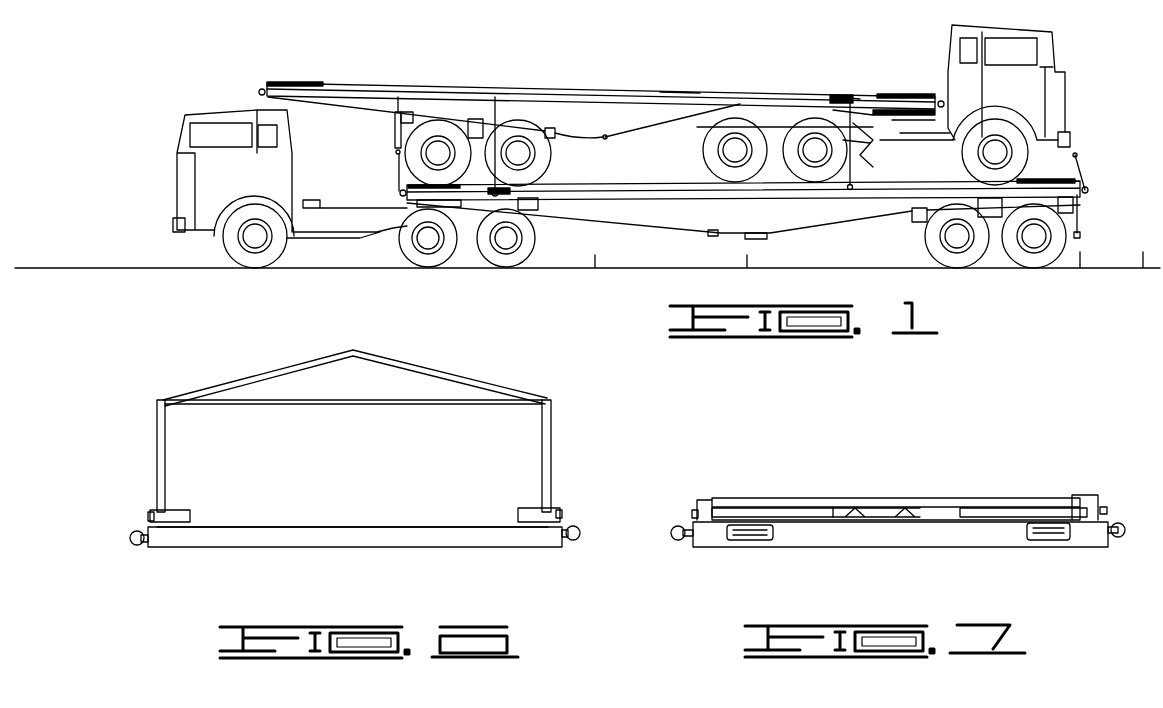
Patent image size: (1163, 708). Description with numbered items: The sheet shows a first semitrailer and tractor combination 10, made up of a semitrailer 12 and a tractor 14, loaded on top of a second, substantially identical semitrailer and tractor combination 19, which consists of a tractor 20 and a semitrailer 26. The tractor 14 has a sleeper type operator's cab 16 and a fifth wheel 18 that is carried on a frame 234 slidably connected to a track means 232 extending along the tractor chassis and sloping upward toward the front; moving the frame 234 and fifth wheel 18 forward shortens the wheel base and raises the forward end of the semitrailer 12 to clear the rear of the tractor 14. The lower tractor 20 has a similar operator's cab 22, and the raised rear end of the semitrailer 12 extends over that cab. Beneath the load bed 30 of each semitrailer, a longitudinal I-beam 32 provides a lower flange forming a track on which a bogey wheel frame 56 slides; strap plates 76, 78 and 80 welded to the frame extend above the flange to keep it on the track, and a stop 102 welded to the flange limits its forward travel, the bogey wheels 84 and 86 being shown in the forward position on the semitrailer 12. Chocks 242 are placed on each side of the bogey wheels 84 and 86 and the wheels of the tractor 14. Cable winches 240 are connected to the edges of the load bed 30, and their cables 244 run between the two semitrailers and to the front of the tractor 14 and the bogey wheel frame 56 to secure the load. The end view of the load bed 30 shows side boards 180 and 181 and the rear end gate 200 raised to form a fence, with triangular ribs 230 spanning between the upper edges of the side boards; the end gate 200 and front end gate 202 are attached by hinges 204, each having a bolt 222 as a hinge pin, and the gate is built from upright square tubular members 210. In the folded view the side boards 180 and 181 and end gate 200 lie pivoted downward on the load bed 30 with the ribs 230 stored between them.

In FIG. 1, the first semitrailer and tractor combination 10 is at (843, 63).
In FIG. 1, the semitrailer 12 is at (408, 72).
In FIG. 1, the tractor 14 is at (1087, 90).
In FIG. 1, the operator's cab 16 is at (1007, 27).
In FIG. 1, the fifth wheel 18 is at (912, 118).
In FIG. 1, the second semitrailer and tractor combination 19 is at (395, 245).
In FIG. 1, the tractor 20 is at (220, 247).
In FIG. 1, the operator's cab 22 is at (215, 110).
In FIG. 1, the semitrailer 26 is at (863, 230).
In FIG. 1, the load bed 30 is at (620, 100).
In FIG. 6, the load bed 30 is at (313, 540).
In FIG. 7, the load bed 30 is at (867, 535).
In FIG. 1, the longitudinal I-beam 32 is at (655, 115).
In FIG. 1, the bogey wheel frame 56 is at (392, 133).
In FIG. 1, the strap plate 76 is at (557, 127).
In FIG. 1, the strap plate 78 is at (480, 120).
In FIG. 1, the strap plate 80 is at (395, 120).
In FIG. 1, the bogey wheel 84 is at (552, 152).
In FIG. 1, the bogey wheel 86 is at (402, 170).
In FIG. 1, the stop 102 is at (573, 118).
In FIG. 6, the side board 180 is at (157, 418).
In FIG. 7, the side board 180 is at (770, 512).
In FIG. 1, the side board 181 is at (677, 92).
In FIG. 6, the side board 181 is at (548, 428).
In FIG. 7, the side board 181 is at (1047, 490).
In FIG. 1, the rear end gate 200 is at (272, 82).
In FIG. 6, the rear end gate 200 is at (378, 447).
In FIG. 7, the rear end gate 200 is at (792, 502).
In FIG. 1, the front end gate 202 is at (910, 92).
In FIG. 6, the hinge 204 is at (150, 518).
In FIG. 7, the hinge 204 is at (698, 495).
In FIG. 1, the upright square tubular member 210 is at (610, 150).
In FIG. 6, the bolt 222 is at (148, 517).
In FIG. 7, the bolt 222 is at (695, 513).
In FIG. 6, the rib 230 is at (302, 372).
In FIG. 7, the rib 230 is at (920, 515).
In FIG. 1, the track means 232 is at (308, 200).
In FIG. 1, the frame 234 is at (903, 117).
In FIG. 1, the cable winch 240 is at (260, 91).
In FIG. 6, the cable winch 240 is at (137, 545).
In FIG. 7, the cable winch 240 is at (683, 542).
In FIG. 1, the chock 242 is at (550, 180).
In FIG. 1, the cable 244 is at (497, 107).